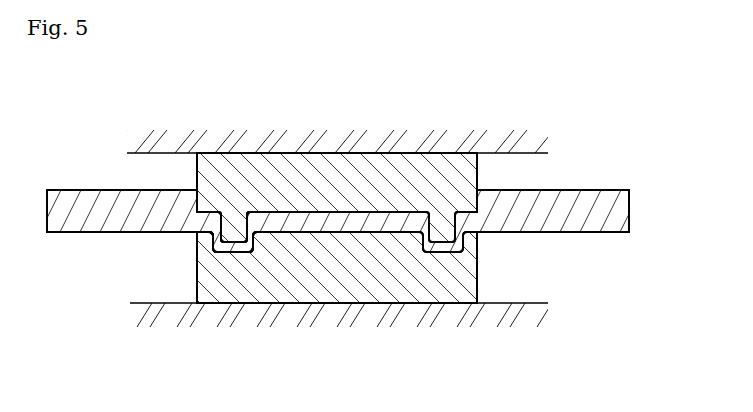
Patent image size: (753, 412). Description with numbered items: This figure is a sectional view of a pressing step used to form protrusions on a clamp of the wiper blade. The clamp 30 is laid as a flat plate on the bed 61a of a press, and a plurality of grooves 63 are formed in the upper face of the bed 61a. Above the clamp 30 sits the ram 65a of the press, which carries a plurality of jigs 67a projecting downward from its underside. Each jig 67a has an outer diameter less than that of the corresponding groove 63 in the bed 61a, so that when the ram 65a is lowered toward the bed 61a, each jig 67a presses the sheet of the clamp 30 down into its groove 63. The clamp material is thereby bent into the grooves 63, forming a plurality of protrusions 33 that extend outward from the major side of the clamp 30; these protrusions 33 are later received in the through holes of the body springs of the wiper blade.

The clamp 30 is at (646, 213).
The protrusions 33 is at (227, 254).
The bed 61a is at (487, 282).
The grooves 63 is at (235, 253).
The ram 65a is at (488, 175).
The jigs 67a is at (234, 238).